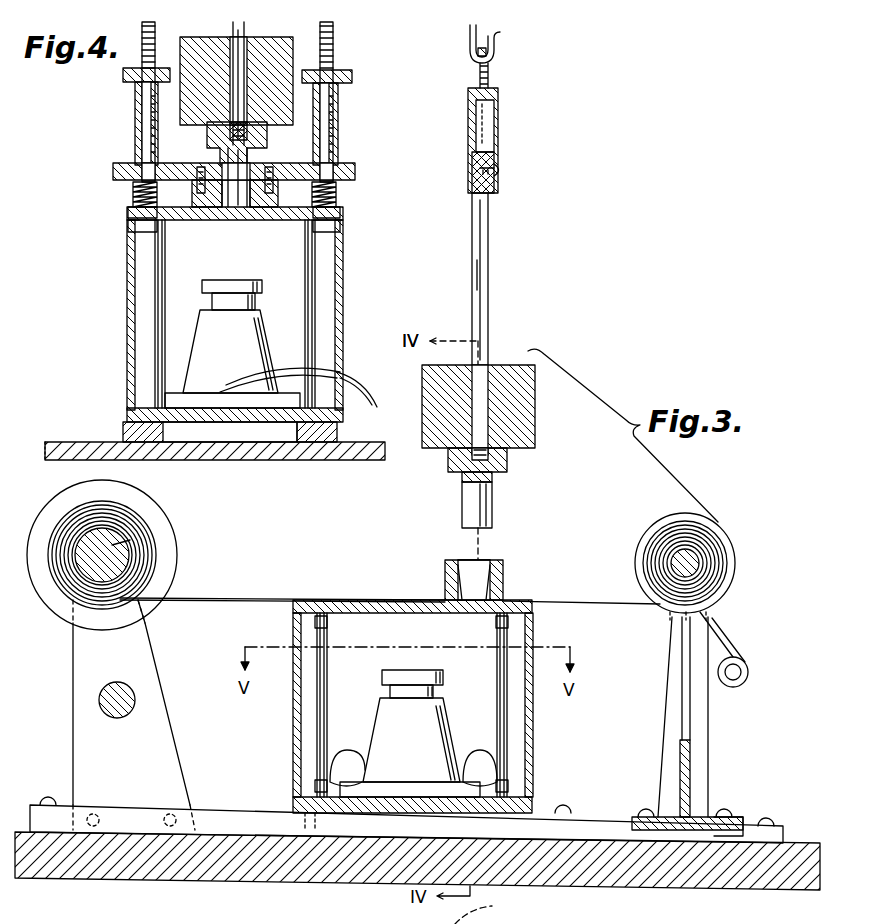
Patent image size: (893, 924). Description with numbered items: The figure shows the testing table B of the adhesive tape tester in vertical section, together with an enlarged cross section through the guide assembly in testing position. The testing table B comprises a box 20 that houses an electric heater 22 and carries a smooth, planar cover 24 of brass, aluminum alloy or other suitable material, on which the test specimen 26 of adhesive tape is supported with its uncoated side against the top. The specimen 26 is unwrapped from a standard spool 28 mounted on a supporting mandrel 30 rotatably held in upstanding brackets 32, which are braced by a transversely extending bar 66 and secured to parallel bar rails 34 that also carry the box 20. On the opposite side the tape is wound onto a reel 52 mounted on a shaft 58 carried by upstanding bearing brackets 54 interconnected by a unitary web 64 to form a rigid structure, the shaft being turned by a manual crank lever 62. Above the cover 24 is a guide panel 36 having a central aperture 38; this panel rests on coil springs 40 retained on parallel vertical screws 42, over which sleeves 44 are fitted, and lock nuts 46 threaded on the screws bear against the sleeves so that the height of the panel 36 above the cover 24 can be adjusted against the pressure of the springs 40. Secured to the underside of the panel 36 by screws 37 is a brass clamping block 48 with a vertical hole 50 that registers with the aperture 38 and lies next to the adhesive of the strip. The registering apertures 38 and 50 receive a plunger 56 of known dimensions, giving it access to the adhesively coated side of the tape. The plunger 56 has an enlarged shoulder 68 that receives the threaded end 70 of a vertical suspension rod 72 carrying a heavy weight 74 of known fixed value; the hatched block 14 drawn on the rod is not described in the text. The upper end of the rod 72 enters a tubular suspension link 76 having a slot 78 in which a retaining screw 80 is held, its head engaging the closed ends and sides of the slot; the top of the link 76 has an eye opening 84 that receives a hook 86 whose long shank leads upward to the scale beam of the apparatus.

In FIG. 3, the weight block 14 is at (515, 418).
In FIG. 4, the box 20 is at (343, 332).
In FIG. 3, the box 20 is at (293, 733).
In FIG. 4, the electric heater 22 is at (232, 344).
In FIG. 3, the electric heater 22 is at (413, 733).
In FIG. 4, the cover 24 is at (195, 225).
In FIG. 3, the cover 24 is at (390, 600).
In FIG. 4, the test specimen 26 is at (252, 220).
In FIG. 3, the test specimen 26 is at (268, 600).
In FIG. 3, the spool 28 is at (172, 568).
In FIG. 3, the supporting mandrel 30 is at (128, 545).
In FIG. 3, the upstanding brackets 32 is at (134, 715).
In FIG. 4, the bar rails 34 is at (123, 430).
In FIG. 3, the bar rails 34 is at (590, 820).
In FIG. 4, the guide panel 36 is at (355, 170).
In FIG. 3, the guide panel 36 is at (503, 570).
In FIG. 4, the screws 37 is at (140, 225).
In FIG. 4, the aperture 38 is at (222, 175).
In FIG. 3, the aperture 38 is at (486, 562).
In FIG. 4, the coil springs 40 is at (133, 190).
In FIG. 4, the vertical screws 42 is at (142, 100).
In FIG. 4, the sleeves 44 is at (135, 134).
In FIG. 4, the lock nuts 46 is at (123, 76).
In FIG. 4, the clamping block 48 is at (195, 195).
In FIG. 3, the clamping block 48 is at (503, 590).
In FIG. 4, the hole 50 is at (238, 210).
In FIG. 3, the hole 50 is at (478, 603).
In FIG. 3, the reel 52 is at (724, 600).
In FIG. 3, the bearing brackets 54 is at (694, 729).
In FIG. 4, the plunger 56 is at (247, 175).
In FIG. 3, the plunger 56 is at (492, 500).
In FIG. 3, the shaft 58 is at (700, 558).
In FIG. 3, the manual crank lever 62 is at (744, 682).
In FIG. 3, the unitary web 64 is at (690, 778).
In FIG. 3, the transversely extending bar 66 is at (118, 716).
In FIG. 4, the enlarged shoulder 68 is at (207, 134).
In FIG. 3, the enlarged shoulder 68 is at (507, 470).
In FIG. 4, the threaded end 70 is at (258, 132).
In FIG. 3, the threaded end 70 is at (485, 456).
In FIG. 4, the suspension rod 72 is at (250, 60).
In FIG. 3, the suspension rod 72 is at (488, 318).
In FIG. 4, the weight 74 is at (198, 40).
In FIG. 3, the suspension link 76 is at (468, 130).
In FIG. 3, the slot 78 is at (496, 128).
In FIG. 3, the retaining screw 80 is at (503, 170).
In FIG. 3, the eye opening 84 is at (492, 76).
In FIG. 3, the hook 86 is at (496, 50).
In FIG. 4, the testing table B is at (348, 282).
In FIG. 3, the testing table B is at (344, 592).